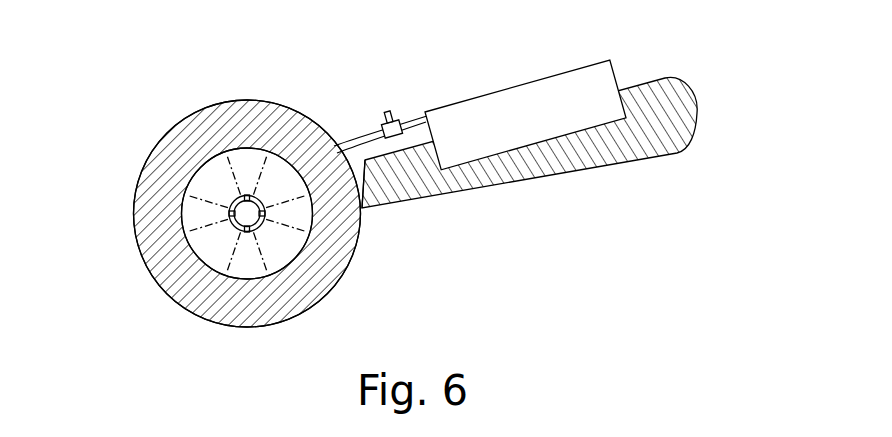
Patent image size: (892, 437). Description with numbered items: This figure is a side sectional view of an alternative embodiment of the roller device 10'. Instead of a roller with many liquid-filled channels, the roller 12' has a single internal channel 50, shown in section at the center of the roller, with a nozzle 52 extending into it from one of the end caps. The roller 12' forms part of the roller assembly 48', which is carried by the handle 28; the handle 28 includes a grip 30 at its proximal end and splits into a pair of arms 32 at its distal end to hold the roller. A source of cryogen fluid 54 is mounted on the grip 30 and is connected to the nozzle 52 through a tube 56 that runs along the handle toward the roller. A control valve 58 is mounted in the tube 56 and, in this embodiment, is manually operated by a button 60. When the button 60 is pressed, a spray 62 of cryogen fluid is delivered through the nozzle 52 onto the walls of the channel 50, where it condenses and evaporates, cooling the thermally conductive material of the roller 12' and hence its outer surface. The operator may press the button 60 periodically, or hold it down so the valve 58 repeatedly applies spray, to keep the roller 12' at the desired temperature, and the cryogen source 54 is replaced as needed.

The roller device 10' is at (407, 195).
The roller 12' is at (247, 194).
The handle 28 is at (644, 46).
The grip 30 is at (563, 174).
The arm 32 is at (367, 209).
The roller assembly 48' is at (238, 222).
The internal channel 50 is at (202, 167).
The nozzle 52 is at (251, 230).
The source of cryogen fluid 54 is at (562, 73).
The tube 56 is at (377, 134).
The control valve 58 is at (404, 122).
The button 60 is at (389, 111).
The spray 62 is at (231, 169).